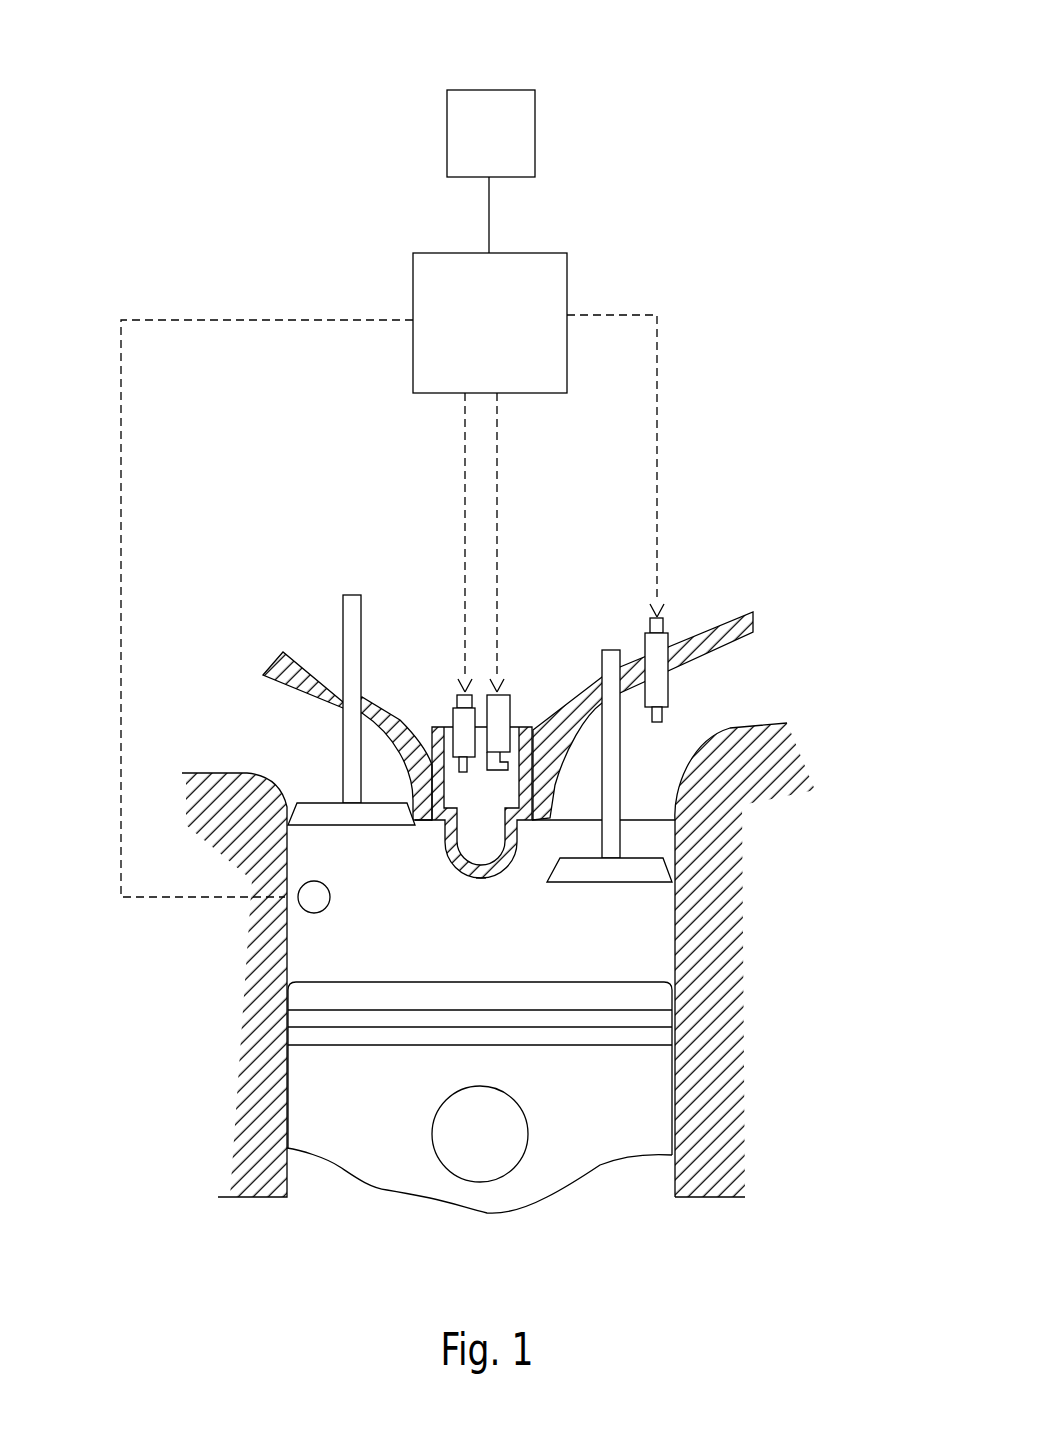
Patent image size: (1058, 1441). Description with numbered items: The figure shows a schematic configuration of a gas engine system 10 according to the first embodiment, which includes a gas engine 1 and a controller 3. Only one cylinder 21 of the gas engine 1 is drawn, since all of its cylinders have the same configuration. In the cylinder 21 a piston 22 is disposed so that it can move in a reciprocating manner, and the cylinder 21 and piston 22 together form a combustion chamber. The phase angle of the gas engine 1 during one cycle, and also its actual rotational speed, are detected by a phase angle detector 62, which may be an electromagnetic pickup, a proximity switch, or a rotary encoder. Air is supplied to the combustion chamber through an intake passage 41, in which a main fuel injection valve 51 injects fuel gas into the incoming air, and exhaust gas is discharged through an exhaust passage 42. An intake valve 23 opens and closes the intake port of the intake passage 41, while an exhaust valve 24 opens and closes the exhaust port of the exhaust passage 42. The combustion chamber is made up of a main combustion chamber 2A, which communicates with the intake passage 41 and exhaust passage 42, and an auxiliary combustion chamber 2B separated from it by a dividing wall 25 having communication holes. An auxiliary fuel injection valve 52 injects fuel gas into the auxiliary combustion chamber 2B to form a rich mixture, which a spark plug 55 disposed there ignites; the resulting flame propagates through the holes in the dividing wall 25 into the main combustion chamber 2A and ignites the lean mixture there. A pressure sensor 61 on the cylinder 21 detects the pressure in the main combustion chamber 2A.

The gas engine 1 is at (210, 1141).
The main combustion chamber 2A is at (647, 950).
The auxiliary combustion chamber 2B is at (432, 727).
The controller 3 is at (535, 277).
The gas engine system 10 is at (292, 181).
The cylinder 21 is at (700, 1052).
The piston 22 is at (583, 1120).
The intake valve 23 is at (640, 883).
The exhaust valve 24 is at (312, 802).
The dividing wall 25 is at (478, 878).
The intake passage 41 is at (712, 727).
The exhaust passage 42 is at (290, 698).
The main fuel injection valve 51 is at (645, 648).
The auxiliary fuel injection valve 52 is at (455, 725).
The spark plug 55 is at (517, 693).
The pressure sensor 61 is at (311, 902).
The phase angle detector 62 is at (487, 98).